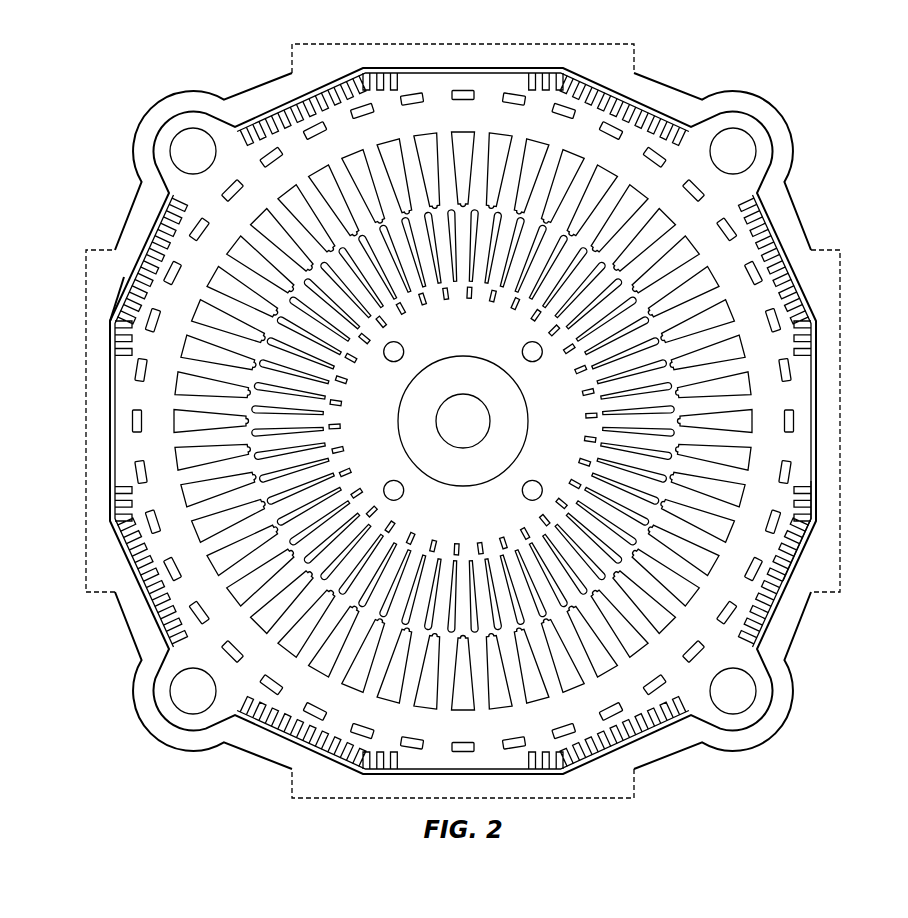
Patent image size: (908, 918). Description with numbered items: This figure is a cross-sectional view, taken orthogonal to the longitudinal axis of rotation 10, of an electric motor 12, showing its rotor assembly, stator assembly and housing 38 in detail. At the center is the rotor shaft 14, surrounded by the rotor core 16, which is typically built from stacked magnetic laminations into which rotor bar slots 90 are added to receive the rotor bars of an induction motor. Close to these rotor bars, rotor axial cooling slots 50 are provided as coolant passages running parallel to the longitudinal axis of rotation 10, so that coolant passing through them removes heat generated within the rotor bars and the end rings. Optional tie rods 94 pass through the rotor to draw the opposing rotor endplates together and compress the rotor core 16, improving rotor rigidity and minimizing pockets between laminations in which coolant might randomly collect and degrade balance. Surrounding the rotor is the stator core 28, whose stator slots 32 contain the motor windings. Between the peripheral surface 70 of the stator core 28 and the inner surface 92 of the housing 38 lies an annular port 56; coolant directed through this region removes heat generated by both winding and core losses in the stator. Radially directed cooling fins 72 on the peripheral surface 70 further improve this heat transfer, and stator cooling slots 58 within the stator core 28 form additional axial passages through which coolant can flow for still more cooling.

The longitudinal axis of rotation 10 is at (482, 420).
The electric motor 12 is at (669, 79).
The rotor shaft 14 is at (425, 406).
The rotor core 16 is at (365, 433).
The stator core 28 is at (122, 322).
The stator slots 32 is at (683, 251).
The housing 38 is at (133, 281).
The rotor axial cooling slots 50 is at (534, 320).
The annular port 56 is at (813, 320).
The stator cooling slots 58 is at (788, 367).
The peripheral surface 70 is at (601, 76).
The cooling fins 72 is at (803, 507).
The rotor bar slots 90 is at (783, 553).
The inner surface 92 is at (462, 67).
The tie rods 94 is at (393, 489).